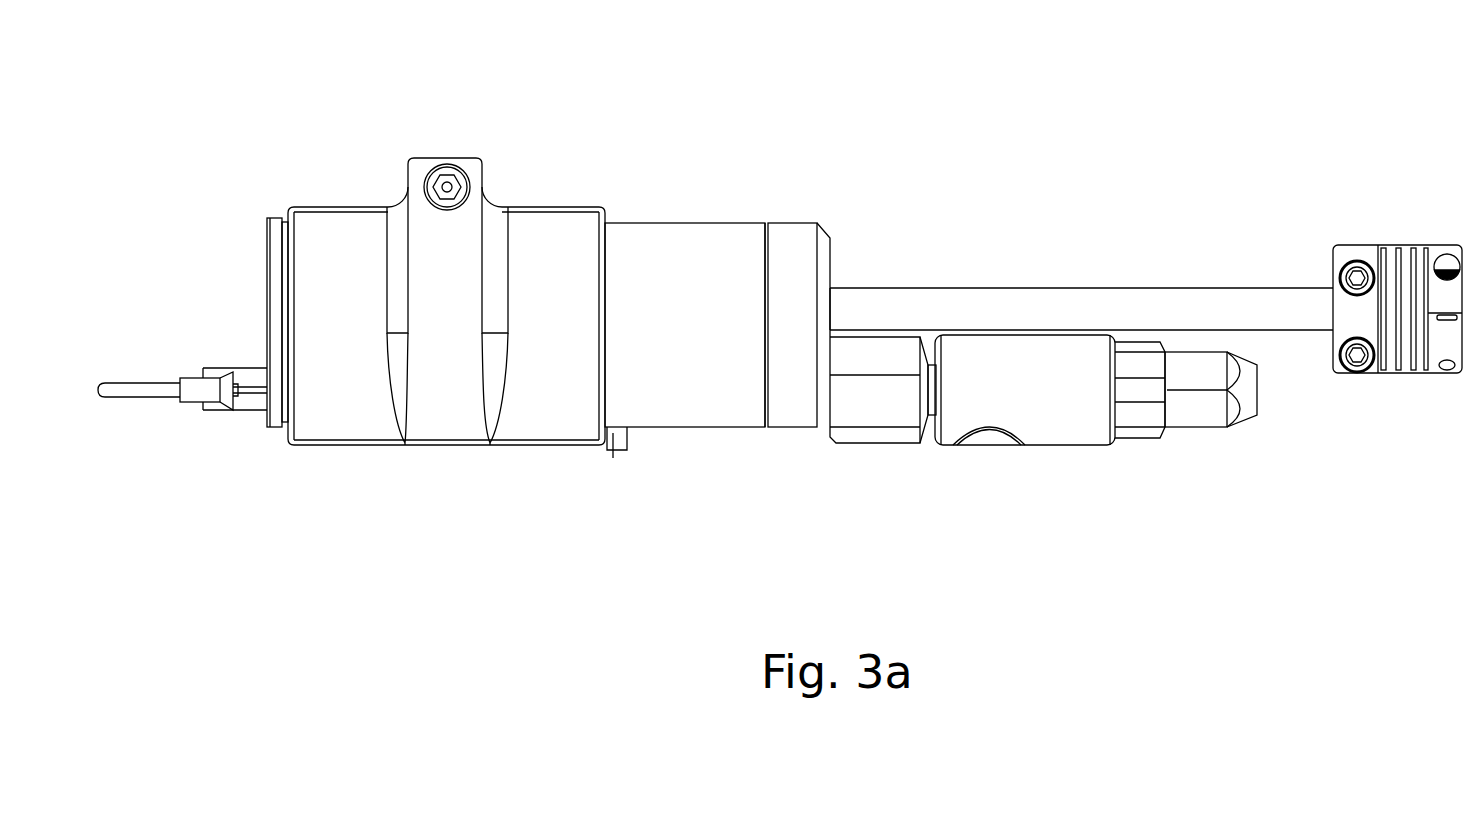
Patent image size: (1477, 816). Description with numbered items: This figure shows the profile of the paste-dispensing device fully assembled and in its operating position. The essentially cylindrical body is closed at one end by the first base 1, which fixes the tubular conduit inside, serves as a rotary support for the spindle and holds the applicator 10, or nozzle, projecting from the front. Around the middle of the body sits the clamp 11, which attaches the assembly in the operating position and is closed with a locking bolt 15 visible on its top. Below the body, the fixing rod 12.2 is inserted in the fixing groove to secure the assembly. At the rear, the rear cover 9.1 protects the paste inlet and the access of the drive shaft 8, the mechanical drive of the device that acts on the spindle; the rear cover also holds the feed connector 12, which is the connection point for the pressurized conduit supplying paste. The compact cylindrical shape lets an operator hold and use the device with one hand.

The first base 1 is at (690, 263).
The drive shaft 8 is at (953, 310).
The rear cover 9.1 is at (800, 245).
The applicator 10 is at (187, 388).
The clamp 11 is at (457, 252).
The feed connector 12 is at (1022, 387).
The fixing rod 12.2 is at (613, 453).
The locking bolt 15 is at (447, 183).